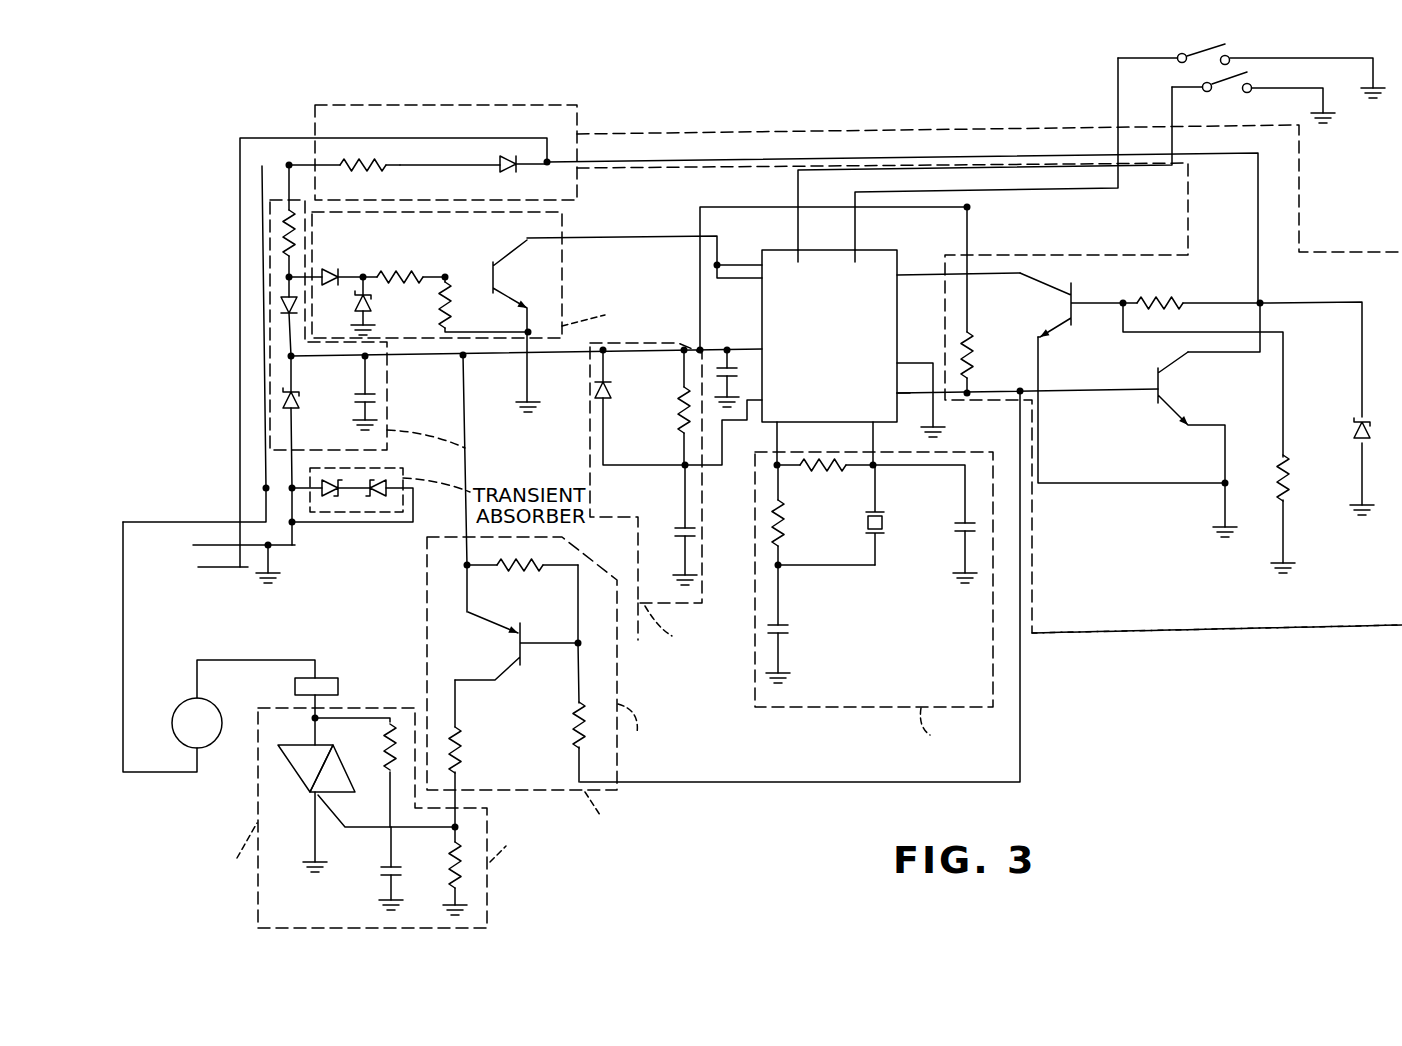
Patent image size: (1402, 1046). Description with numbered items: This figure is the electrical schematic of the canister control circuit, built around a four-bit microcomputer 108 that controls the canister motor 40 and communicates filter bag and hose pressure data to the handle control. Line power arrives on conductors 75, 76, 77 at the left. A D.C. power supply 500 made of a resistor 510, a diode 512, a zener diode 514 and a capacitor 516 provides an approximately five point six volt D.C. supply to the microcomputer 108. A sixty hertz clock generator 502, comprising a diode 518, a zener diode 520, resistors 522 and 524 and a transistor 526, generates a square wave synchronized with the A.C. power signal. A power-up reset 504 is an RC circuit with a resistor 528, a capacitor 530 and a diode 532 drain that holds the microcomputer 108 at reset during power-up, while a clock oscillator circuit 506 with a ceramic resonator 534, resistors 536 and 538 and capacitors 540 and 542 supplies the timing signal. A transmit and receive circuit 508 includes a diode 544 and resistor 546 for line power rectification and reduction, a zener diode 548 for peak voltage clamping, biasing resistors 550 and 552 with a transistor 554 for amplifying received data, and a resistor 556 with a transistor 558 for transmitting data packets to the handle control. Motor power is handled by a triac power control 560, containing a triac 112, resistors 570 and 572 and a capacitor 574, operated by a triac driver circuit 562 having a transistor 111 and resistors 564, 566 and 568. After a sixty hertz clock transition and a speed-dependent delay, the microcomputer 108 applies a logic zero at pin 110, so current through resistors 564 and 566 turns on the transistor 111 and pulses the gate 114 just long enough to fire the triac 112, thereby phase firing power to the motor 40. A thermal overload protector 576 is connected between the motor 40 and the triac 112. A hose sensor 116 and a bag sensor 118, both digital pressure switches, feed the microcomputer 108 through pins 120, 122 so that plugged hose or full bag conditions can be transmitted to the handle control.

The canister motor 40 is at (190, 700).
The power line conductor 75 is at (208, 510).
The power line conductor 76 is at (214, 567).
The power line conductor 77 is at (193, 545).
The microcomputer 108 is at (896, 250).
The pin 110 is at (895, 404).
The transistor 111 is at (519, 663).
The triac 112 is at (303, 796).
The gate 114 is at (340, 823).
The hose sensor 116 is at (1226, 92).
The bag sensor 118 is at (1200, 52).
The pin 120 is at (855, 255).
The pin 122 is at (798, 255).
The D.C. power supply 500 is at (270, 380).
The 60 Hz. clock generator 502 is at (560, 222).
The power-up reset 504 is at (667, 516).
The clock oscillator circuit 506 is at (874, 600).
The transmit and receive circuit 508 is at (1229, 634).
The resistor 510 is at (282, 233).
The diode 512 is at (282, 303).
The zener diode 514 is at (282, 403).
The capacitor 516 is at (375, 402).
The diode 518 is at (326, 260).
The zener diode 520 is at (373, 304).
The resistor 522 is at (424, 270).
The resistor 524 is at (450, 302).
The transistor 526 is at (510, 252).
The resistor 528 is at (674, 420).
The capacitor 530 is at (686, 524).
The diode 532 is at (611, 393).
The ceramic resonator 534 is at (884, 534).
The resistor 536 is at (816, 475).
The resistor 538 is at (792, 514).
The capacitor 540 is at (966, 522).
The capacitor 542 is at (798, 604).
The diode 544 is at (506, 162).
The resistor 546 is at (380, 160).
The zener diode 548 is at (1355, 432).
The biasing resistor 550 is at (1180, 300).
The biasing resistor 552 is at (1289, 490).
The transistor 554 is at (1056, 327).
The resistor 556 is at (972, 340).
The transistor 558 is at (1148, 403).
The triac power control 560 is at (348, 818).
The triac driver circuit 562 is at (574, 688).
The resistor 564 is at (530, 576).
The resistor 566 is at (569, 719).
The resistor 568 is at (466, 753).
The resistor 570 is at (386, 751).
The resistor 572 is at (448, 871).
The capacitor 574 is at (386, 866).
The thermal overload protector 576 is at (368, 660).